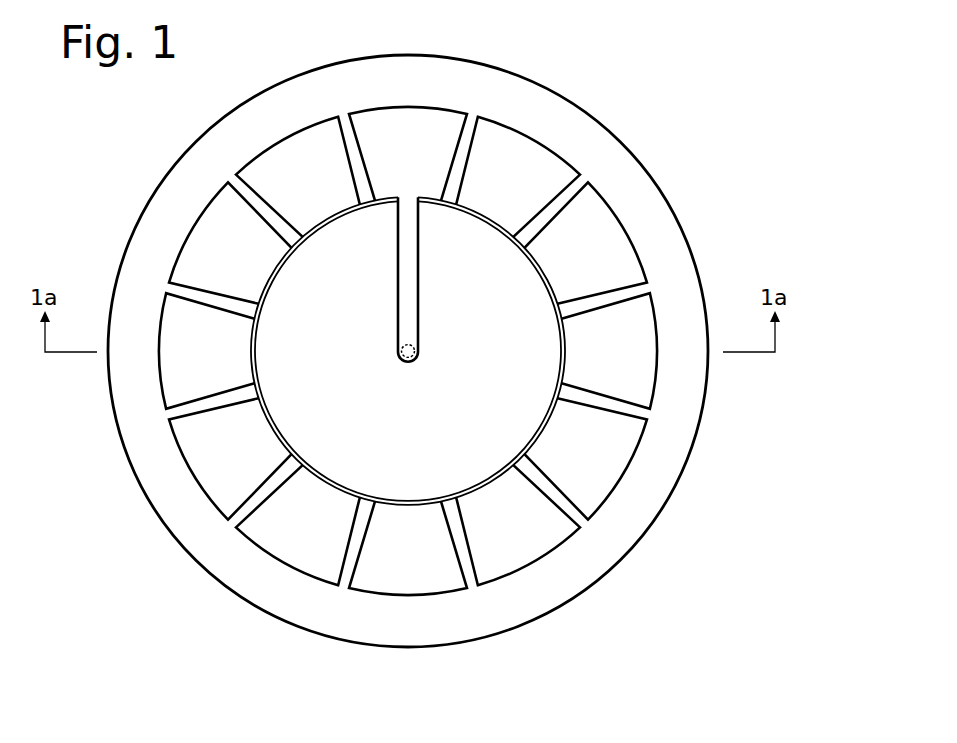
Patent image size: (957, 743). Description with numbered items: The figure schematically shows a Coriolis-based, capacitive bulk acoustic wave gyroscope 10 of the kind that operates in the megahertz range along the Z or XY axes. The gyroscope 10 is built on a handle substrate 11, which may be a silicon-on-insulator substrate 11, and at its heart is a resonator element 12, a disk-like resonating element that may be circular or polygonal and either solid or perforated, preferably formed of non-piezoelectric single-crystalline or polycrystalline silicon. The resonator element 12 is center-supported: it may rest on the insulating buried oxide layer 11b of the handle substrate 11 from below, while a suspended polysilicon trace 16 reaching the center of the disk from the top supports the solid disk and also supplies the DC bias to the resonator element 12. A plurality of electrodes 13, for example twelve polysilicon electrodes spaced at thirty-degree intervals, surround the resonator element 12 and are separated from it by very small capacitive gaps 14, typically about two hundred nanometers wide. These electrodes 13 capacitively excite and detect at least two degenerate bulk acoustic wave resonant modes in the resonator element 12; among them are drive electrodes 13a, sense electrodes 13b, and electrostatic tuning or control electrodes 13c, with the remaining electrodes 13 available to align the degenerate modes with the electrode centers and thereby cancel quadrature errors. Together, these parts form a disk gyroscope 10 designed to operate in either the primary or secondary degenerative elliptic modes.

The bulk acoustic wave gyroscope 10 is at (760, 229).
The handle substrate 11 is at (707, 411).
The insulating (buried oxide) layer 11b is at (404, 359).
The resonator element 12 is at (317, 305).
The electrodes 13 is at (572, 139).
The drive electrodes 13a is at (605, 465).
The sense electrodes 13b is at (517, 556).
The electrostatic tuning electrodes 13c is at (283, 521).
The capacitive gaps 14 is at (255, 344).
The suspended polysilicon trace 16 is at (419, 293).